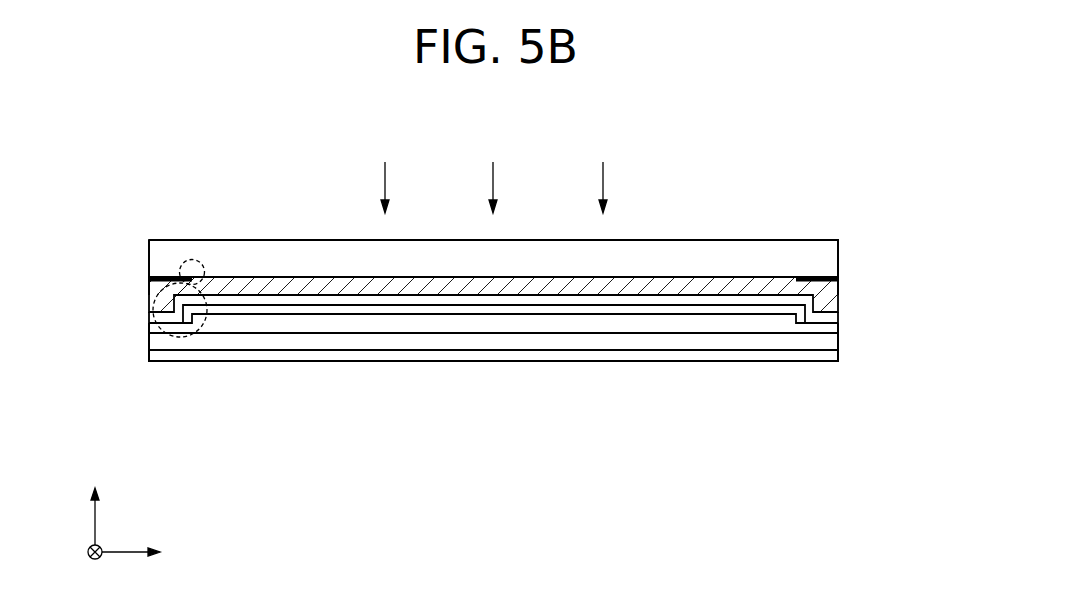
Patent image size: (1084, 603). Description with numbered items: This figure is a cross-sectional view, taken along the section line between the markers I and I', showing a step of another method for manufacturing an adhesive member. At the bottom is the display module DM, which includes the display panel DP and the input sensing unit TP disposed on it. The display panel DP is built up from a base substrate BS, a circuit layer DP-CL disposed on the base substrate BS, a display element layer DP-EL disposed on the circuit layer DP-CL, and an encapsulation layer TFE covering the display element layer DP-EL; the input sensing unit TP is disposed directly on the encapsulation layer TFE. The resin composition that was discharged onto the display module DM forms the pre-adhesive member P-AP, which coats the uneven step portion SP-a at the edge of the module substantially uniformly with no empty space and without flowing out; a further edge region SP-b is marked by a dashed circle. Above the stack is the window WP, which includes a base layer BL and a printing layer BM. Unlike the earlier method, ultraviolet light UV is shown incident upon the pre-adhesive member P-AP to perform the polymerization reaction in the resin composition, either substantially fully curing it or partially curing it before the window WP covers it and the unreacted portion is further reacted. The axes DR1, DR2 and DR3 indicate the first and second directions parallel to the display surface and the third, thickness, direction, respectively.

The ultraviolet light UV is at (494, 173).
The window WP is at (918, 230).
The base layer BL is at (828, 253).
The printing layer BM is at (836, 278).
The pre-adhesive member P-AP is at (836, 296).
The display module DM is at (838, 315).
The input sensing unit TP is at (836, 320).
The display panel DP is at (652, 433).
The encapsulation layer TFE is at (632, 308).
The display element layer DP-EL is at (547, 325).
The circuit layer DP-CL is at (438, 340).
The base substrate BS is at (358, 352).
The step portion SP-a is at (157, 318).
The second sealing part SP-b is at (194, 264).
The section line start I is at (147, 379).
The section line end I' is at (843, 379).
The first directional axis DR1 is at (149, 553).
The second directional axis DR2 is at (95, 566).
The third directional axis DR3 is at (95, 505).